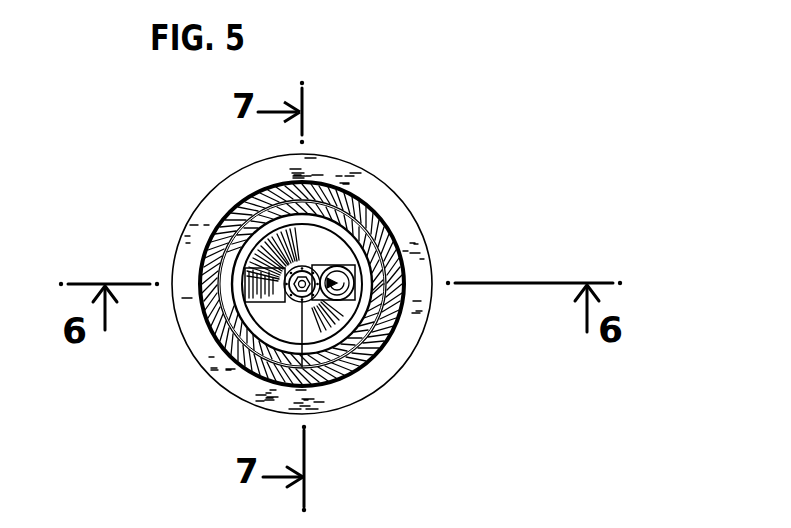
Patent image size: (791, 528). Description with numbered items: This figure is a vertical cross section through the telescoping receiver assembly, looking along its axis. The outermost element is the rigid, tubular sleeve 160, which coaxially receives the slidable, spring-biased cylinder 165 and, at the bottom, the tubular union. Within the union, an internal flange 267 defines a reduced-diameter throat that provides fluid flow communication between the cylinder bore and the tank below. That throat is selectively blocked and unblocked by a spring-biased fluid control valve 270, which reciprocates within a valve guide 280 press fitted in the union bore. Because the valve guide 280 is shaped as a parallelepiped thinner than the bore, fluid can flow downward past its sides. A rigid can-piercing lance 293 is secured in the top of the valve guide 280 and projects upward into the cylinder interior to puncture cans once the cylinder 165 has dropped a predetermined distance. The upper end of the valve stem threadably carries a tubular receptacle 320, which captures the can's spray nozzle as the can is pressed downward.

The tubular sleeve 160 is at (427, 310).
The cylinder 165 is at (357, 189).
The internal flange 267 is at (302, 243).
The fluid control valve 270 is at (312, 268).
The valve guide 280 is at (246, 301).
The can-piercing lance 293 is at (355, 262).
The tubular receptacle 320 is at (302, 367).